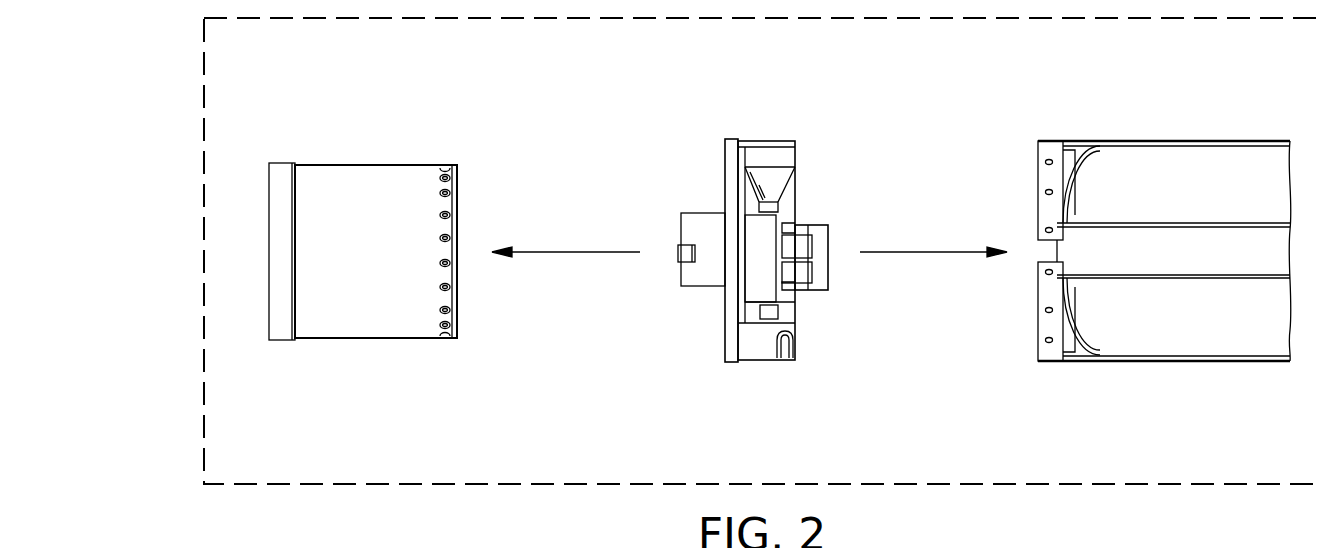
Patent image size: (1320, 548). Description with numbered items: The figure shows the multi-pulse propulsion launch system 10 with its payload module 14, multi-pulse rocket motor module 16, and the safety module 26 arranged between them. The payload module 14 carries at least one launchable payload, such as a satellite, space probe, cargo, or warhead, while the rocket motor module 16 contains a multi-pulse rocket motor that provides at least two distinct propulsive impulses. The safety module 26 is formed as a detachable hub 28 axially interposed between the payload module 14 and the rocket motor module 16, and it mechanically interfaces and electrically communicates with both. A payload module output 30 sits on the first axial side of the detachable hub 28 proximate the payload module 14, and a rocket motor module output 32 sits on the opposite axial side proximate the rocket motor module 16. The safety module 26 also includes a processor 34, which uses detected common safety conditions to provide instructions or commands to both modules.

The multi-pulse propulsion launch system 10 is at (338, 486).
The payload module 14 is at (358, 320).
The multi-pulse rocket motor module 16 is at (1195, 318).
The safety module 26 is at (740, 327).
The detachable hub 28 is at (738, 360).
The payload module output 30 is at (678, 254).
The rocket motor module output 32 is at (814, 253).
The processor 34 is at (788, 198).